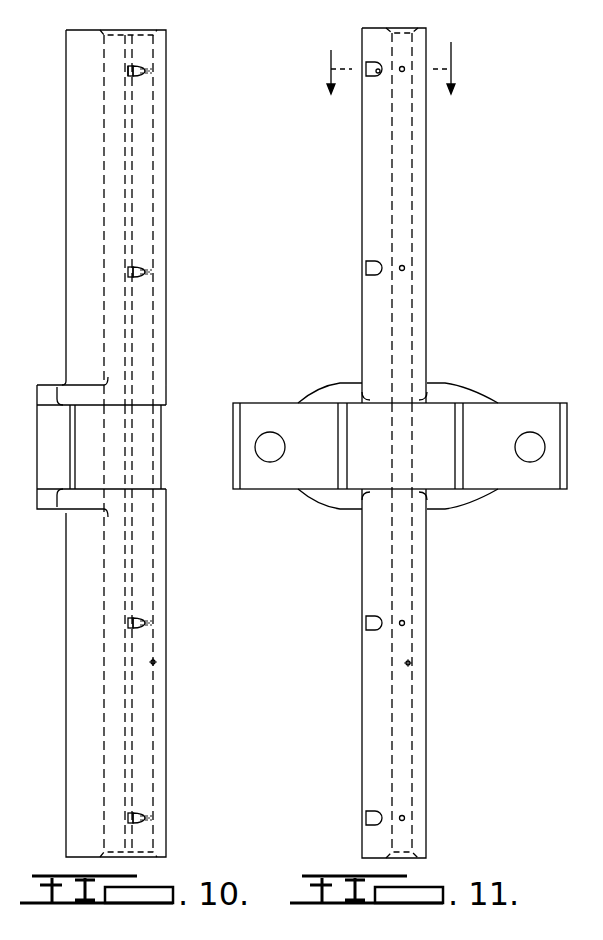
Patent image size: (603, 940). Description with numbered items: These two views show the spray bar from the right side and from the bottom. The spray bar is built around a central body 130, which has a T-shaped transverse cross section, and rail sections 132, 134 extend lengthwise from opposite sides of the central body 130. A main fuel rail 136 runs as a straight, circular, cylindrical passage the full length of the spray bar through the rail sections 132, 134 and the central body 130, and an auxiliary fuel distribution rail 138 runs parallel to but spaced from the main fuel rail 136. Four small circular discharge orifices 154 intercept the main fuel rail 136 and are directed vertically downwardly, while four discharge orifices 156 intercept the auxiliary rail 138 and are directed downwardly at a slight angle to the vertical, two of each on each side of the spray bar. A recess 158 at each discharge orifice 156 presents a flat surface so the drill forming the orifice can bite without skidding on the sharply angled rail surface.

In FIG. 10, the central body 130 is at (37, 512).
In FIG. 11, the central body 130 is at (528, 403).
In FIG. 10, the rail section 132 is at (166, 163).
In FIG. 11, the rail section 132 is at (427, 195).
In FIG. 10, the rail section 134 is at (166, 740).
In FIG. 11, the rail section 134 is at (427, 698).
In FIG. 10, the main fuel rail 136 is at (156, 662).
In FIG. 11, the main fuel rail 136 is at (411, 663).
In FIG. 10, the auxiliary fuel distribution rail 138 is at (105, 610).
In FIG. 10, the discharge orifices 154 is at (150, 71).
In FIG. 11, the discharge orifices 154 is at (402, 72).
In FIG. 10, the discharge orifices 156 is at (146, 66).
In FIG. 11, the discharge orifices 156 is at (376, 77).
In FIG. 10, the recess 158 is at (134, 77).
In FIG. 11, the recess 158 is at (377, 74).